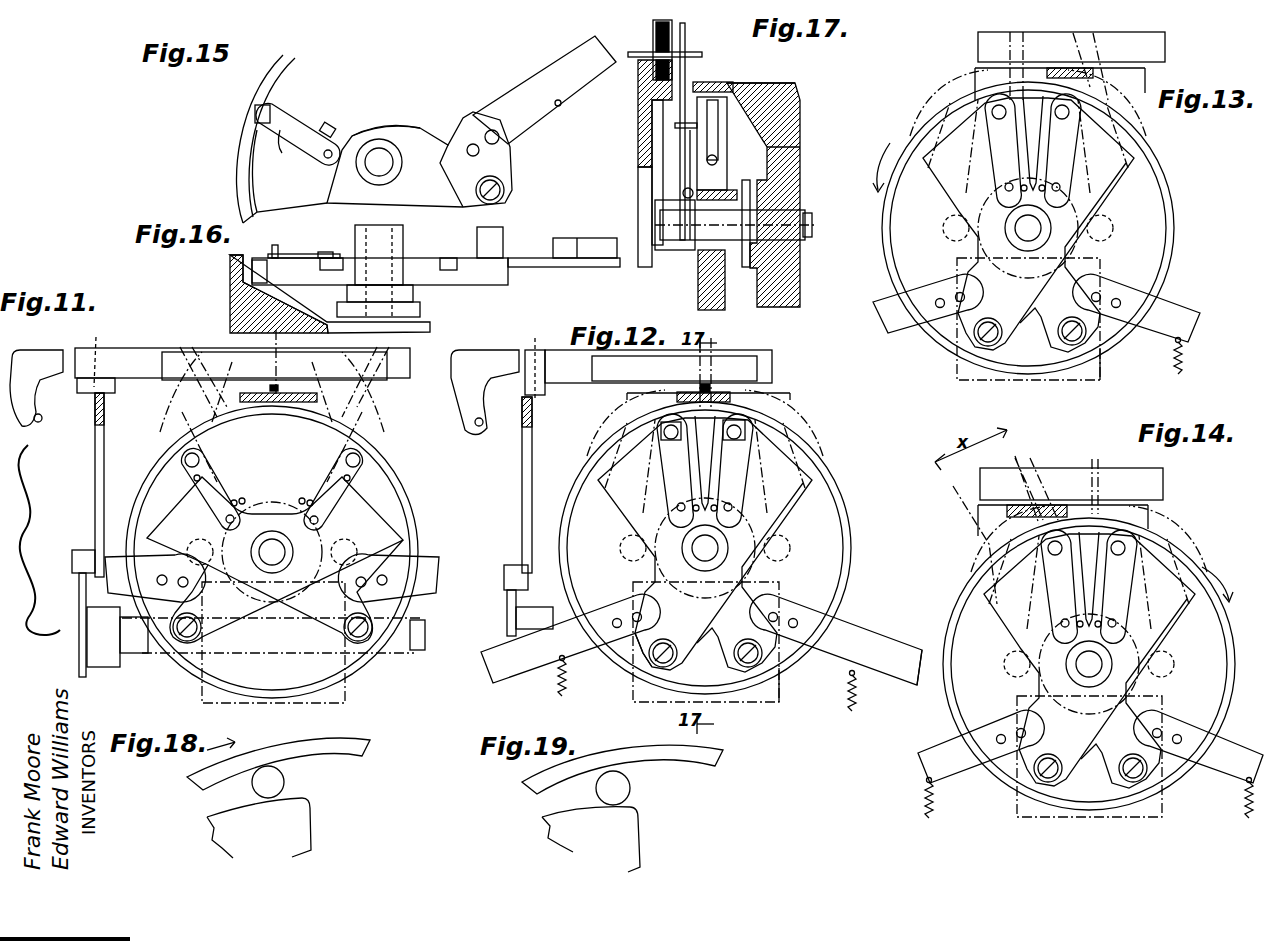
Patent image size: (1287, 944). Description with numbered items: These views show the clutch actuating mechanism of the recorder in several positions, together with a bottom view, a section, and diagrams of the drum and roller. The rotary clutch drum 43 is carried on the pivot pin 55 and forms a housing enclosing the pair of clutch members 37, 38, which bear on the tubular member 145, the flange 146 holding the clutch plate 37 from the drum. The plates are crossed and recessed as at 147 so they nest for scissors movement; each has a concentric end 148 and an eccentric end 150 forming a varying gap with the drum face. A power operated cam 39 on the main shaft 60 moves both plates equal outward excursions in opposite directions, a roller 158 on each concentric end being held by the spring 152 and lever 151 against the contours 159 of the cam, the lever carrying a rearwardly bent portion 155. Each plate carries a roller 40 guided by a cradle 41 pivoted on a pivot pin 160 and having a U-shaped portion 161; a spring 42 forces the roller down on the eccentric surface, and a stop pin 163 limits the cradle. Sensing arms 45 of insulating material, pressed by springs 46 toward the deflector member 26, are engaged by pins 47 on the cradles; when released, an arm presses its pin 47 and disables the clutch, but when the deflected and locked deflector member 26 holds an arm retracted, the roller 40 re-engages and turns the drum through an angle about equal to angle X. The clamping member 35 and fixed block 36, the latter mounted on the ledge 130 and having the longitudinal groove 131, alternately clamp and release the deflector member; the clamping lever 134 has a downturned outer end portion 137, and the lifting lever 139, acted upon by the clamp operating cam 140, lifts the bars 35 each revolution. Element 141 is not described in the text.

In FIG. 11, the deflector member 26 is at (288, 363).
In FIG. 12, the deflector member 26 is at (705, 388).
In FIG. 13, the deflector member 26 is at (1060, 69).
In FIG. 14, the deflector member 26 is at (1063, 490).
In FIG. 17, the deflector member 26 is at (702, 54).
In FIG. 11, the clamping member 35 is at (245, 376).
In FIG. 12, the clamping member 35 is at (658, 371).
In FIG. 13, the clamping member 35 is at (1071, 53).
In FIG. 14, the clamping member 35 is at (1071, 481).
In FIG. 17, the clamping member 35 is at (686, 25).
In FIG. 12, the fixed block 36 is at (720, 371).
In FIG. 17, the fixed block 36 is at (672, 72).
In FIG. 11, the clutch member 37 is at (275, 554).
In FIG. 12, the clutch member 37 is at (688, 544).
In FIG. 13, the clutch member 37 is at (1003, 224).
In FIG. 14, the clutch member 37 is at (1075, 660).
In FIG. 15, the clutch member 37 is at (419, 159).
In FIG. 16, the clutch member 37 is at (473, 272).
In FIG. 17, the clutch member 37 is at (793, 144).
In FIG. 18, the clutch member 37 is at (305, 810).
In FIG. 19, the clutch member 37 is at (555, 835).
In FIG. 11, the clutch member 38 is at (272, 552).
In FIG. 12, the clutch member 38 is at (705, 548).
In FIG. 13, the clutch member 38 is at (1044, 228).
In FIG. 14, the clutch member 38 is at (1092, 664).
In FIG. 17, the clutch member 38 is at (700, 302).
In FIG. 11, the power operated cam 39 is at (296, 643).
In FIG. 12, the power operated cam 39 is at (711, 665).
In FIG. 13, the power operated cam 39 is at (1009, 319).
In FIG. 11, the roller 40 is at (329, 420).
In FIG. 12, the roller 40 is at (728, 406).
In FIG. 17, the roller 40 is at (733, 86).
In FIG. 18, the roller 40 is at (285, 782).
In FIG. 19, the roller 40 is at (630, 789).
In FIG. 11, the cradle 41 is at (302, 489).
In FIG. 12, the cradle 41 is at (716, 470).
In FIG. 13, the cradle 41 is at (1024, 150).
In FIG. 15, the cradle 41 is at (298, 125).
In FIG. 16, the cradle 41 is at (305, 256).
In FIG. 11, the spring 42 is at (272, 449).
In FIG. 12, the spring 42 is at (718, 452).
In FIG. 14, the spring 42 is at (1086, 542).
In FIG. 15, the spring 42 is at (270, 108).
In FIG. 17, the spring 42 is at (712, 130).
In FIG. 11, the clutch drum 43 is at (279, 552).
In FIG. 12, the clutch drum 43 is at (706, 548).
In FIG. 13, the clutch drum 43 is at (1028, 228).
In FIG. 14, the clutch drum 43 is at (1089, 664).
In FIG. 16, the clutch drum 43 is at (230, 300).
In FIG. 17, the clutch drum 43 is at (795, 118).
In FIG. 18, the clutch drum 43 is at (355, 752).
In FIG. 19, the clutch drum 43 is at (700, 762).
In FIG. 11, the sensing arm 45 is at (293, 480).
In FIG. 12, the sensing arm 45 is at (701, 533).
In FIG. 13, the sensing arm 45 is at (1048, 173).
In FIG. 14, the sensing arm 45 is at (1106, 598).
In FIG. 17, the sensing arm 45 is at (689, 162).
In FIG. 17, the spring 46 is at (684, 192).
In FIG. 12, the pin 47 is at (682, 420).
In FIG. 14, the pin 47 is at (1080, 586).
In FIG. 15, the pin 47 is at (282, 155).
In FIG. 16, the pin 47 is at (284, 239).
In FIG. 17, the pin 47 is at (684, 128).
In FIG. 17, the pivot pin 55 is at (795, 222).
In FIG. 11, the main shaft 60 is at (434, 635).
In FIG. 17, the ledge 130 is at (640, 96).
In FIG. 17, the longitudinal groove 131 is at (645, 70).
In FIG. 11, the clamping lever 134 is at (100, 357).
In FIG. 12, the clamping lever 134 is at (530, 360).
In FIG. 17, the clamping lever 134 is at (655, 22).
In FIG. 12, the downturned outer end portion 137 is at (479, 397).
In FIG. 11, the lifting lever 139 is at (72, 485).
In FIG. 12, the lifting lever 139 is at (506, 485).
In FIG. 11, the clamp operating cam 140 is at (79, 625).
In FIG. 12, the clamp operating cam 140 is at (504, 613).
In FIG. 11, the block 141 is at (66, 548).
In FIG. 12, the block 141 is at (504, 559).
In FIG. 13, the tubular member 145 is at (1050, 226).
In FIG. 14, the tubular member 145 is at (1086, 678).
In FIG. 15, the tubular member 145 is at (395, 147).
In FIG. 16, the tubular member 145 is at (403, 240).
In FIG. 17, the tubular member 145 is at (677, 252).
In FIG. 16, the flange 146 is at (340, 309).
In FIG. 17, the flange 146 is at (746, 268).
In FIG. 11, the recess 147 is at (305, 593).
In FIG. 12, the recess 147 is at (756, 577).
In FIG. 13, the recess 147 is at (1080, 257).
In FIG. 14, the recess 147 is at (1153, 693).
In FIG. 16, the recess 147 is at (426, 264).
In FIG. 17, the recess 147 is at (712, 185).
In FIG. 12, the concentric end 148 is at (621, 668).
In FIG. 15, the concentric end 148 is at (512, 152).
In FIG. 11, the eccentric end 150 is at (243, 426).
In FIG. 12, the eccentric end 150 is at (701, 451).
In FIG. 13, the eccentric end 150 is at (1023, 131).
In FIG. 14, the eccentric end 150 is at (1073, 567).
In FIG. 15, the eccentric end 150 is at (255, 152).
In FIG. 18, the eccentric end 150 is at (222, 815).
In FIG. 19, the eccentric end 150 is at (550, 815).
In FIG. 11, the lever 151 is at (281, 566).
In FIG. 12, the lever 151 is at (701, 639).
In FIG. 13, the lever 151 is at (1042, 308).
In FIG. 14, the lever 151 is at (1097, 746).
In FIG. 15, the lever 151 is at (528, 96).
In FIG. 16, the lever 151 is at (533, 268).
In FIG. 12, the spring 152 is at (699, 688).
In FIG. 14, the spring 152 is at (1089, 798).
In FIG. 12, the rearwardly bent portion 155 is at (911, 642).
In FIG. 16, the rearwardly bent portion 155 is at (590, 238).
In FIG. 12, the roller 158 is at (742, 662).
In FIG. 13, the roller 158 is at (1060, 350).
In FIG. 14, the roller 158 is at (1097, 799).
In FIG. 15, the roller 158 is at (506, 185).
In FIG. 16, the roller 158 is at (503, 236).
In FIG. 12, the contours 159 is at (802, 691).
In FIG. 13, the contours 159 is at (1093, 376).
In FIG. 15, the pivot pin 160 is at (358, 130).
In FIG. 16, the U-shaped portion 161 is at (252, 272).
In FIG. 17, the U-shaped portion 161 is at (750, 92).
In FIG. 15, the stop pin 163 is at (338, 128).
In FIG. 16, the stop pin 163 is at (331, 254).